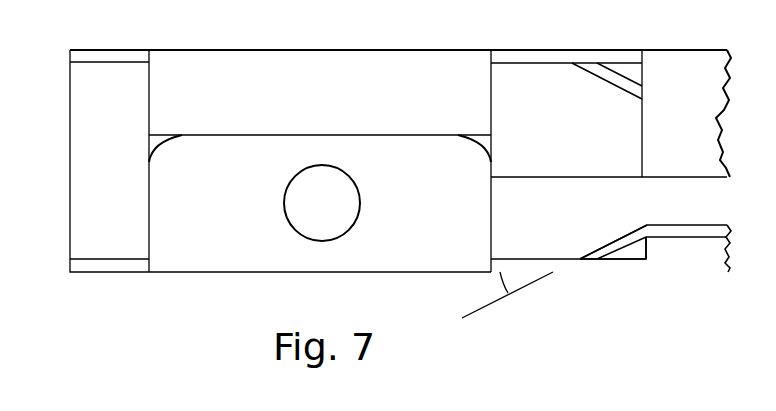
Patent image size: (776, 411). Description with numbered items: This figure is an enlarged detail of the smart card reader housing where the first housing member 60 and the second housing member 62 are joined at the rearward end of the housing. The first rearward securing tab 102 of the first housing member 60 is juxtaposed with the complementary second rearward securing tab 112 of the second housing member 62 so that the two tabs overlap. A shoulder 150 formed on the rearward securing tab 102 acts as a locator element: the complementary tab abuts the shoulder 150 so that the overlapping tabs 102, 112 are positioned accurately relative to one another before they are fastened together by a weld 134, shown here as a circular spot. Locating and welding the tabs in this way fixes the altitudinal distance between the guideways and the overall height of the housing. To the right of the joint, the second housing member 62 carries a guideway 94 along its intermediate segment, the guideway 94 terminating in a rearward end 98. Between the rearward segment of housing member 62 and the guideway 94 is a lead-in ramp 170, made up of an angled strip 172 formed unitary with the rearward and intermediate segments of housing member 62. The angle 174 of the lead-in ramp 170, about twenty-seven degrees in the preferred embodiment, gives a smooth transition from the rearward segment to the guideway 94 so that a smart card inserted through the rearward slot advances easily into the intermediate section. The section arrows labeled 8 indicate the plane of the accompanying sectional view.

The first housing member 60 is at (440, 50).
The second housing member 62 is at (223, 275).
The guideway 94 is at (680, 224).
The rearward end 98 is at (642, 250).
The first rearward securing tab 102 is at (286, 127).
The second rearward securing tab 112 is at (403, 148).
The weld 134 is at (300, 237).
The shoulder 150 is at (242, 137).
The lead-in ramp 170 is at (612, 240).
The angled strip 172 is at (600, 253).
The angle 174 is at (500, 285).
The section line 8- 8 is at (452, 201).